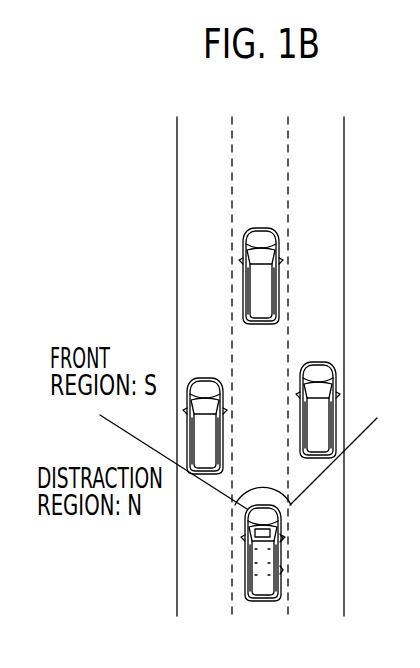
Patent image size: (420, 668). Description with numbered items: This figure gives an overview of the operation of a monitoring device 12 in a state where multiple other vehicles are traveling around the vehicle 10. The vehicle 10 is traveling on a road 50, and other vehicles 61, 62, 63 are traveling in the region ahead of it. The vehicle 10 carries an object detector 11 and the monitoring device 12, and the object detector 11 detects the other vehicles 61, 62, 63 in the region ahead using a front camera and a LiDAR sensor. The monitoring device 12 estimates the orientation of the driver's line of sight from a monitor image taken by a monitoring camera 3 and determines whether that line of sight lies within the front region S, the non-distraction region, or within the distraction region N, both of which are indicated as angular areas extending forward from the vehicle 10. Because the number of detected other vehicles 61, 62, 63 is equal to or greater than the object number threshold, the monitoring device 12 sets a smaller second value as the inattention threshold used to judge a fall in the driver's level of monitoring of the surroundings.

The road 50 is at (173, 212).
The other vehicle 61 is at (279, 240).
The other vehicle 62 is at (321, 370).
The other vehicle 63 is at (205, 378).
The vehicle 10 is at (250, 584).
The monitoring camera 3 is at (248, 533).
The object detector 11 is at (286, 538).
The monitoring device 12 is at (286, 571).